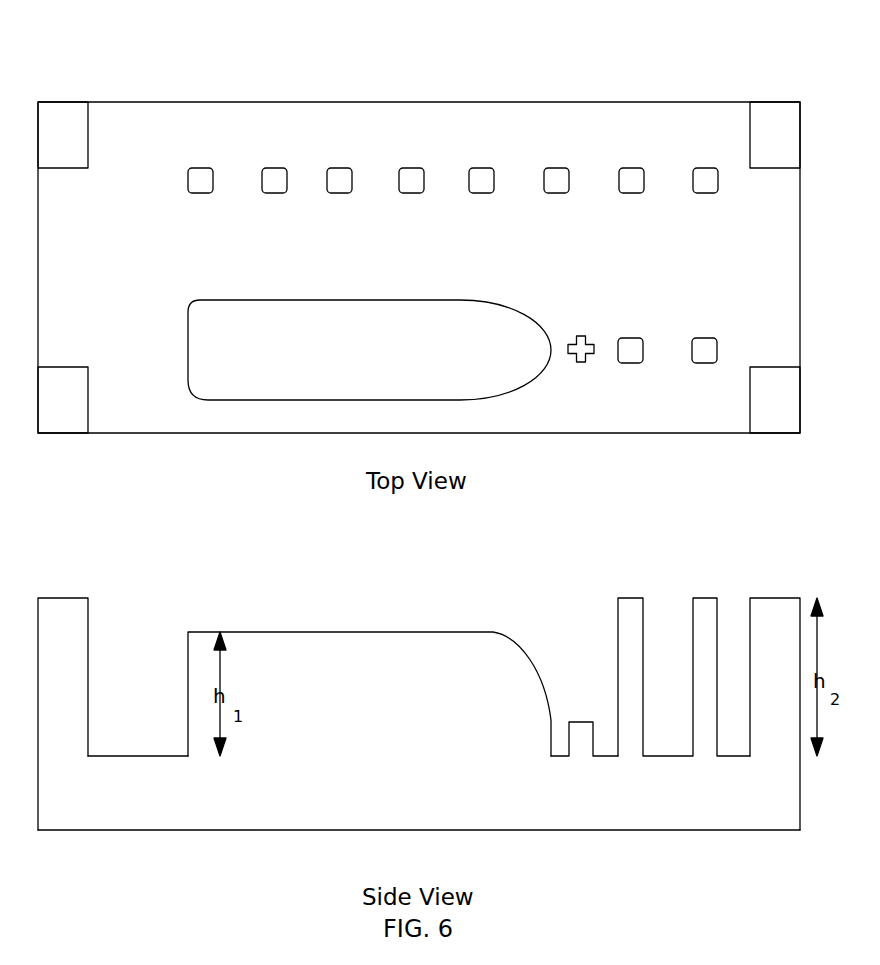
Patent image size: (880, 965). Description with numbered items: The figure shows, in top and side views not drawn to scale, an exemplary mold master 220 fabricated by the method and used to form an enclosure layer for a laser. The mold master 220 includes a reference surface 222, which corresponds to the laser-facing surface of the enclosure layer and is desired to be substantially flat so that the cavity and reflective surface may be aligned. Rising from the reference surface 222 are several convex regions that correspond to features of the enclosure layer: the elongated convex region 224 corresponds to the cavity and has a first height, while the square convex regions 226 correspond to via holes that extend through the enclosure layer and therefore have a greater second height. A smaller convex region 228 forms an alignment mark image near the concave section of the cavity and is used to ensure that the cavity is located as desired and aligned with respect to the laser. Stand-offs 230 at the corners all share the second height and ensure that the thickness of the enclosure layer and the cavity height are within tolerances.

The mold master 220 is at (440, 31).
The reference surface 222 is at (105, 722).
The convex region 224 is at (188, 380).
The convex regions 226 is at (696, 168).
The convex region 228 is at (581, 362).
The stand-offs 230 is at (88, 400).